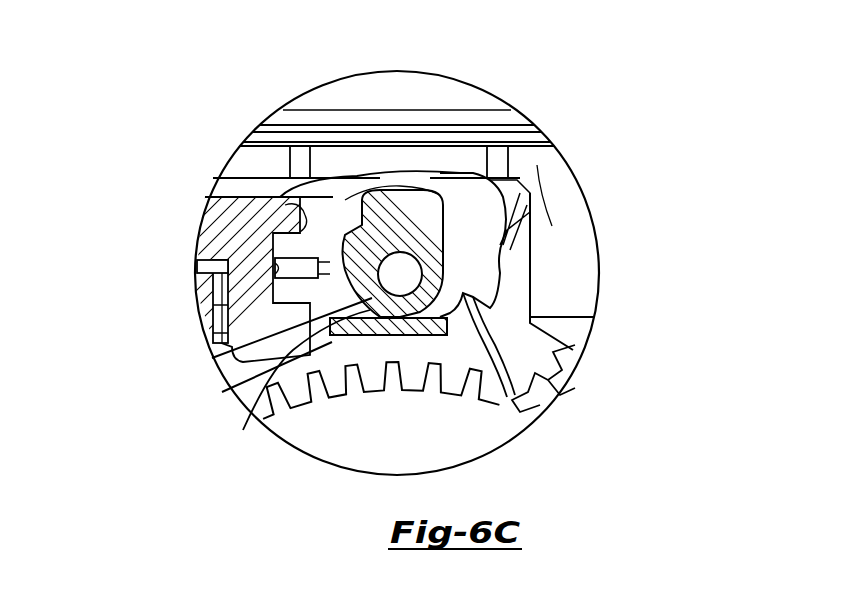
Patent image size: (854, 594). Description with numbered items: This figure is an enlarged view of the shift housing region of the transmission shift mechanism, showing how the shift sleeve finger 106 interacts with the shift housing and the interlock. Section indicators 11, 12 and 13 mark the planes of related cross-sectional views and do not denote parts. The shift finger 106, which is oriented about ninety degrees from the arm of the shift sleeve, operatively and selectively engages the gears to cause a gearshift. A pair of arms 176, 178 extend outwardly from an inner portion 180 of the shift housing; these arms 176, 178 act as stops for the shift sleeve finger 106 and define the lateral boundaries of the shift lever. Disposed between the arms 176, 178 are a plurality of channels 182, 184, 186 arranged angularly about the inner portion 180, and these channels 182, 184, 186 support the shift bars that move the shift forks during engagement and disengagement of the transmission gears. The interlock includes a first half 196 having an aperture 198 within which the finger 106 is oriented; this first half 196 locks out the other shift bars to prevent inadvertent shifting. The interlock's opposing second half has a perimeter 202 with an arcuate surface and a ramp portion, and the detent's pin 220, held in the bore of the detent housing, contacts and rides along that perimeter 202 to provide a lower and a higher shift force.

The section line 11- 11 is at (183, 182).
The section line 12- 12 is at (188, 358).
The section line 13- 13 is at (178, 270).
The shift finger 106 is at (306, 290).
The arm 176 is at (320, 207).
The arm 178 is at (378, 335).
The inner portion 180 is at (265, 237).
The channel 182 is at (350, 215).
The channel 184 is at (233, 357).
The channel 186 is at (255, 397).
The first half 196 is at (345, 180).
The aperture 198 is at (380, 252).
The perimeter 202 is at (513, 200).
The pin 220 is at (523, 248).